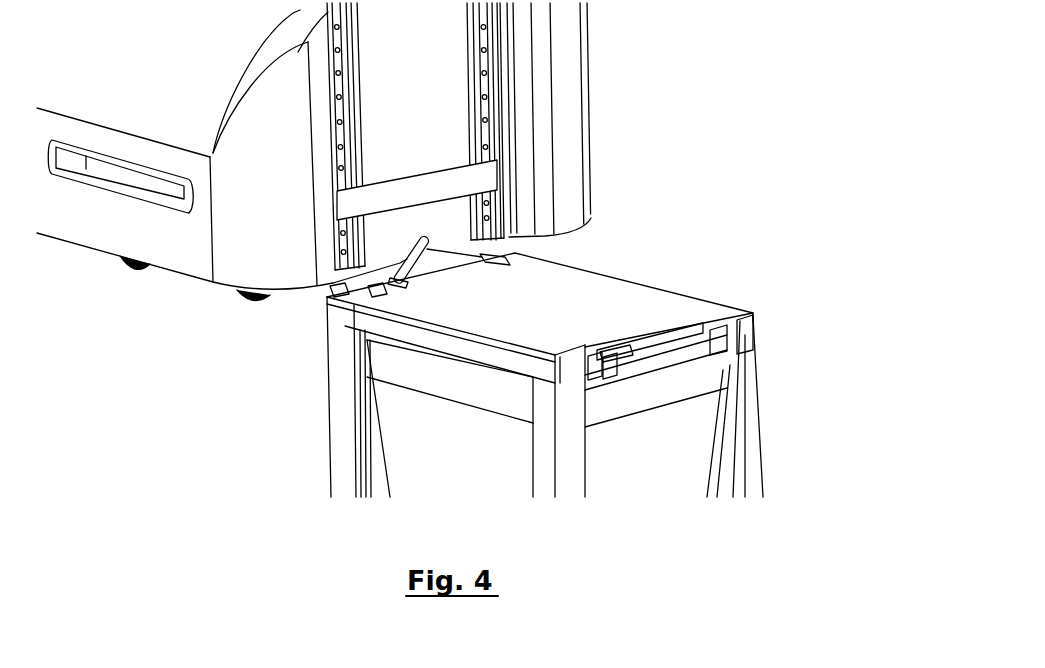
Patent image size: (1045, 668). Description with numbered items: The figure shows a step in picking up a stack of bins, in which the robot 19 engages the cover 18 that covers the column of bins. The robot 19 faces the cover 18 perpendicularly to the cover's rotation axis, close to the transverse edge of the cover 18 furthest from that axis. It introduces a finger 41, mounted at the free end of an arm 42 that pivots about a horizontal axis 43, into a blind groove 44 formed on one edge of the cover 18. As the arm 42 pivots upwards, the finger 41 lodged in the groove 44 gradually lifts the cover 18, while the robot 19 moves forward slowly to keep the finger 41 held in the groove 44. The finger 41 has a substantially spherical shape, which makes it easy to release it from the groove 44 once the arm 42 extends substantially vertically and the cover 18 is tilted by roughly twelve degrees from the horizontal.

The cover 18 is at (628, 309).
The robot 19 is at (232, 228).
The finger 41 is at (407, 283).
The arm 42 is at (333, 283).
The horizontal axis 43 is at (430, 241).
The blind groove 44 is at (336, 298).